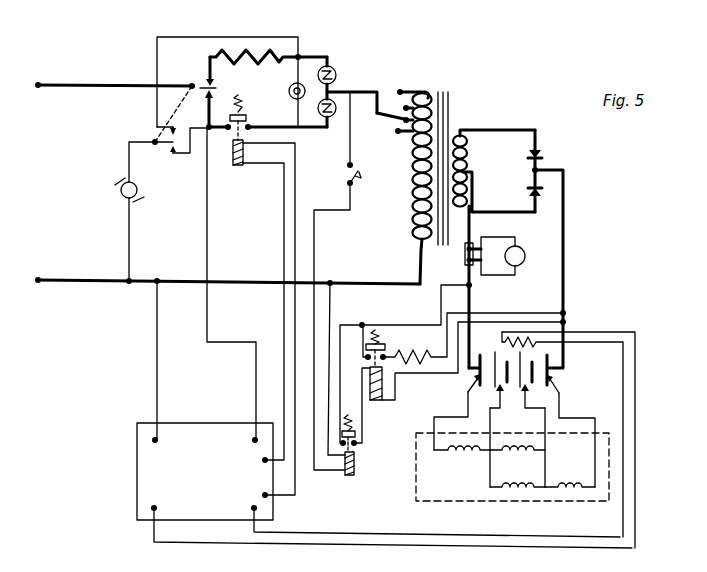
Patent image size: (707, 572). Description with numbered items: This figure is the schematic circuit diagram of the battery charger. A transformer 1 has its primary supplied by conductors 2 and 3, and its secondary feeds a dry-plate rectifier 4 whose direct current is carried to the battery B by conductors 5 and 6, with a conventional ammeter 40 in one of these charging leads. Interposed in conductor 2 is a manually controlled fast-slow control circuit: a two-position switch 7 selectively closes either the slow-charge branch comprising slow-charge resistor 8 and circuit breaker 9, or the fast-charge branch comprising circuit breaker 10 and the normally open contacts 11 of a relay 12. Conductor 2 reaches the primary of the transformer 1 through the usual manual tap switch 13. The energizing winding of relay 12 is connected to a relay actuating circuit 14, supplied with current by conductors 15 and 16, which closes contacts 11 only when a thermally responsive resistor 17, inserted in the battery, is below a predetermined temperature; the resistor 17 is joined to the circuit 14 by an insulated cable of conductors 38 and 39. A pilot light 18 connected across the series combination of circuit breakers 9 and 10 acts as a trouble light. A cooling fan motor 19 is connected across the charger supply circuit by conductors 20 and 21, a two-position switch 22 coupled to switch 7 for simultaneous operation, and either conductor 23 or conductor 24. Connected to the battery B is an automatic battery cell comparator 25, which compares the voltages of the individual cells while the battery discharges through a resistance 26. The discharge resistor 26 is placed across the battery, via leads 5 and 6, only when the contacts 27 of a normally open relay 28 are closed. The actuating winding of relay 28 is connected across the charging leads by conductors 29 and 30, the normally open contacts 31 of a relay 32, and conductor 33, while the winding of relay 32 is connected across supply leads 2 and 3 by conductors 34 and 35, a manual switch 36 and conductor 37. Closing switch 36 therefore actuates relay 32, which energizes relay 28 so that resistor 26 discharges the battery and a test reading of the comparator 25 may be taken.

The transformer 1 is at (459, 98).
The conductor 2 is at (99, 90).
The conductor 3 is at (97, 277).
The dry-plate rectifier 4 is at (548, 160).
The conductor 5 is at (473, 224).
The conductor 6 is at (567, 240).
The two-position switch 7 is at (206, 83).
The slow-charge resistor 8 is at (247, 49).
The circuit breaker 9 is at (336, 66).
The circuit breaker 10 is at (341, 116).
The normally open contacts 11 is at (247, 118).
The relay 12 is at (232, 162).
The manual tap switch 13 is at (391, 128).
The relay actuating circuit 14 is at (205, 471).
The conductor 15 is at (252, 378).
The conductor 16 is at (148, 378).
The thermally responsive resistor 17 is at (531, 333).
The pilot light 18 is at (289, 90).
The cooling fan motor 19 is at (120, 191).
The conductor 20 is at (127, 222).
The conductor 21 is at (128, 159).
The two-position switch 22 is at (168, 146).
The conductor 23 is at (178, 37).
The conductor 24 is at (196, 146).
The automatic battery cell comparator 25 is at (480, 477).
The discharge resistor 26 is at (420, 352).
The contacts 27 is at (391, 350).
The relay 28 is at (388, 388).
The conductor 29 is at (441, 322).
The conductor 30 is at (348, 322).
The normally open contacts 31 is at (358, 444).
The relay 32 is at (357, 454).
The conductor 33 is at (457, 378).
The conductor 34 is at (328, 330).
The conductor 35 is at (315, 242).
The manual switch 36 is at (357, 181).
The conductor 37 is at (352, 143).
The conductor 38 is at (458, 536).
The conductor 39 is at (516, 547).
The ammeter 40 is at (526, 256).
The battery B is at (553, 361).